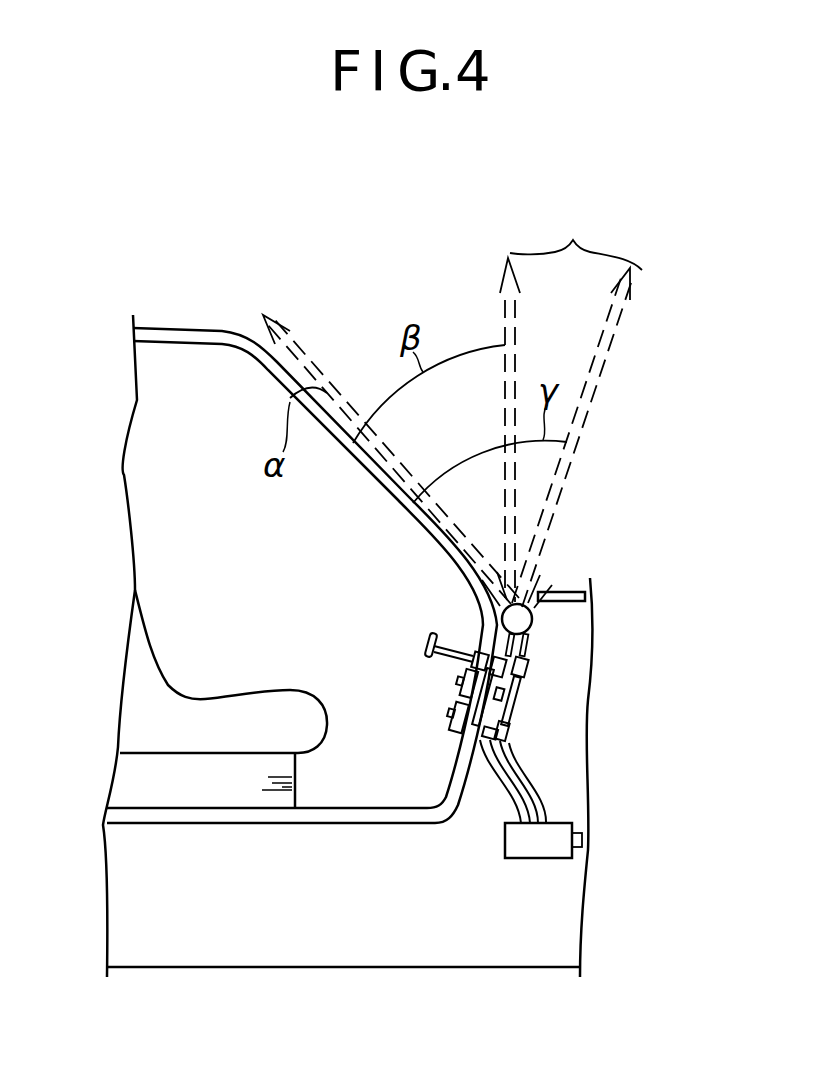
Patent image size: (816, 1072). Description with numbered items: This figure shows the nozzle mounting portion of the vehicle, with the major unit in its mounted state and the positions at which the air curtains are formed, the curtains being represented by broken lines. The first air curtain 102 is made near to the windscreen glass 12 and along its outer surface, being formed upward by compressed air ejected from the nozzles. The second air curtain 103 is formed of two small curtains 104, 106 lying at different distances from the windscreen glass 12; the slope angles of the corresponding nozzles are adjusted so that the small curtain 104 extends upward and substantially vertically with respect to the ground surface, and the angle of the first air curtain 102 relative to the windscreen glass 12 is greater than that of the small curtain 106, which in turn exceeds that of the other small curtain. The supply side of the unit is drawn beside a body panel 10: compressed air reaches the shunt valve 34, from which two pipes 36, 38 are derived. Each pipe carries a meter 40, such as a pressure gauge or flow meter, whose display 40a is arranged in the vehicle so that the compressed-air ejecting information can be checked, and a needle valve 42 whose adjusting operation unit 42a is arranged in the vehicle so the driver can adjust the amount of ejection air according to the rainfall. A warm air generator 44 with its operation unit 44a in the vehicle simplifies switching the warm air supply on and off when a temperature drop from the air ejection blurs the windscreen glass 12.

The vehicle body panel 10 is at (572, 591).
The windscreen glass 12 is at (267, 350).
The shunt valve 34 is at (543, 858).
The pipe 36 is at (507, 787).
The pipe 38 is at (547, 790).
The meter 40 is at (513, 717).
The display of the meter 40a is at (452, 712).
The needle valve 42 is at (510, 658).
The needle valve adjusting operation unit 42a is at (425, 645).
The warm air generator 44 is at (520, 687).
The operation unit of the warm air generator 44a is at (458, 681).
The first air curtain 102 is at (300, 353).
The second air curtain 103 is at (573, 238).
The small curtain 104 is at (505, 310).
The small curtain 106 is at (612, 336).